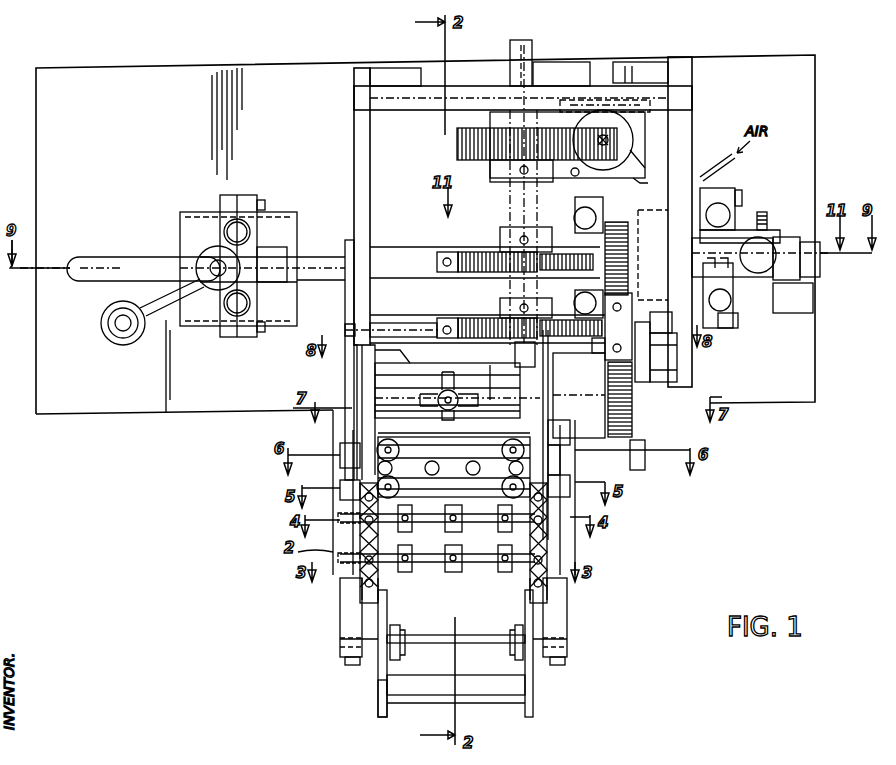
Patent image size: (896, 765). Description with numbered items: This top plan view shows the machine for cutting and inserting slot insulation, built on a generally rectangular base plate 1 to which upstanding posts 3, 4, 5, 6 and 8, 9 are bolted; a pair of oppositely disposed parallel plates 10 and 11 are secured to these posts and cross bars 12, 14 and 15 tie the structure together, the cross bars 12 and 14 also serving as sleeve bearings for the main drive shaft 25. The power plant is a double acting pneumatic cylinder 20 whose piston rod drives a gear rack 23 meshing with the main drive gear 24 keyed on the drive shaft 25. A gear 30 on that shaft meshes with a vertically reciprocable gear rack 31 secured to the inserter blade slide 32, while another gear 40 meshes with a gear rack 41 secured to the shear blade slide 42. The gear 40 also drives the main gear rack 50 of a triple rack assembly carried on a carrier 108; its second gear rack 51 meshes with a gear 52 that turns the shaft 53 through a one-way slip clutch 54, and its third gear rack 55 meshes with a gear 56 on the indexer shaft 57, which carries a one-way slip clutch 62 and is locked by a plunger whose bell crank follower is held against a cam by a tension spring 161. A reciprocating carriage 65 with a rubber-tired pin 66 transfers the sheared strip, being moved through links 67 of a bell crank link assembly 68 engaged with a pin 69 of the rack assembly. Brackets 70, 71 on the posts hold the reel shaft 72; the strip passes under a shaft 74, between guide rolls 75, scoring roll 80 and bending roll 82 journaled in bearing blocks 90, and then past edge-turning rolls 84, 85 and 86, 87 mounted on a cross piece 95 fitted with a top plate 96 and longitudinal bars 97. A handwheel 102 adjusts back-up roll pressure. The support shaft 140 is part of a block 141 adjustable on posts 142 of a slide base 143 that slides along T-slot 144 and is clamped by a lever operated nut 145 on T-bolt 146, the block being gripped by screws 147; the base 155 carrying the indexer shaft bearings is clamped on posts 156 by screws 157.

The base plate 1 is at (168, 68).
The upstanding post 3 is at (392, 68).
The upstanding post 4 is at (562, 62).
The upstanding post 5 is at (640, 62).
The upstanding post 6 is at (678, 357).
The upstanding post 8 is at (340, 622).
The upstanding post 9 is at (567, 624).
The parallel plate 10 is at (567, 578).
The parallel plate 11 is at (355, 584).
The cross bar 12 is at (372, 113).
The cross bar 14 is at (380, 364).
The cross bar 15 is at (692, 116).
The double acting pneumatic cylinder 20 is at (640, 152).
The gear rack 23 is at (615, 130).
The main drive gear 24 is at (457, 142).
The drive shaft 25 is at (510, 213).
The gear 30 is at (484, 254).
The gear rack 31 is at (440, 256).
The inserter blade slide 32 is at (402, 256).
The gear 40 is at (484, 320).
The gear rack 41 is at (444, 318).
The shear blade slide 42 is at (384, 322).
The main gear rack 50 is at (592, 342).
The second gear rack 51 is at (603, 362).
The gear 52 is at (608, 426).
The shaft 53 is at (491, 382).
The one-way slip clutch 54 is at (579, 397).
The third gear rack 55 is at (621, 305).
The gear 56 is at (630, 229).
The indexer shaft 57 is at (575, 305).
The one-way slip clutch 62 is at (641, 212).
The reciprocating carriage 65 is at (345, 292).
The rubber-tired pin 66 is at (396, 322).
The links 67 is at (352, 372).
The bell crank link assembly 68 is at (350, 450).
The pin 69 is at (650, 312).
The bracket 70 is at (533, 668).
The bracket 71 is at (378, 672).
The shaft 72 is at (460, 698).
The shaft 74 is at (442, 645).
The guide rolls 75 is at (396, 627).
The scoring roll 80 is at (500, 570).
The roll 82 is at (498, 526).
The roll 84 is at (562, 500).
The roll 85 is at (352, 497).
The roll 86 is at (560, 455).
The roll 87 is at (366, 446).
The bearing block 90 is at (360, 540).
The cross piece 95 is at (445, 522).
The top plate 96 is at (435, 522).
The longitudinally extending bars 97 is at (472, 460).
The handwheel 102 is at (452, 372).
The carrier 108 is at (643, 348).
The support shaft 140 is at (288, 252).
The block 141 is at (244, 338).
The posts 142 is at (225, 228).
The slide base 143 is at (180, 222).
The T-slot 144 is at (102, 257).
The lever operated nut 145 is at (200, 258).
The T-bolt 146 is at (208, 268).
The screws 147 is at (262, 202).
The base 155 is at (725, 188).
The posts 156 is at (730, 215).
The screws 157 is at (741, 196).
The tension spring 161 is at (768, 223).